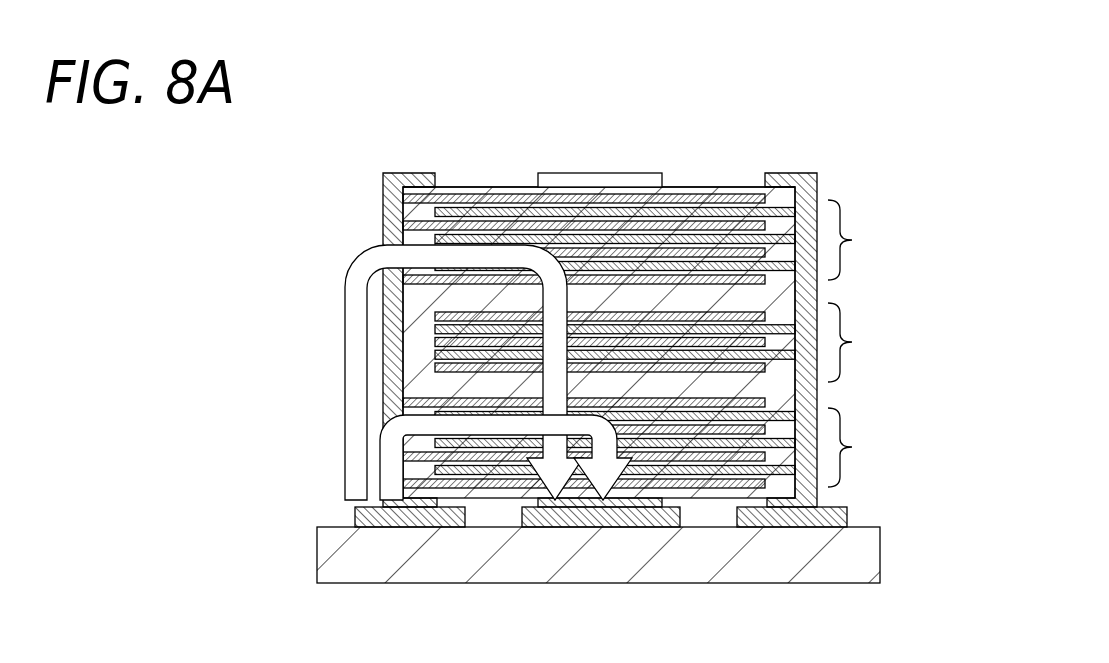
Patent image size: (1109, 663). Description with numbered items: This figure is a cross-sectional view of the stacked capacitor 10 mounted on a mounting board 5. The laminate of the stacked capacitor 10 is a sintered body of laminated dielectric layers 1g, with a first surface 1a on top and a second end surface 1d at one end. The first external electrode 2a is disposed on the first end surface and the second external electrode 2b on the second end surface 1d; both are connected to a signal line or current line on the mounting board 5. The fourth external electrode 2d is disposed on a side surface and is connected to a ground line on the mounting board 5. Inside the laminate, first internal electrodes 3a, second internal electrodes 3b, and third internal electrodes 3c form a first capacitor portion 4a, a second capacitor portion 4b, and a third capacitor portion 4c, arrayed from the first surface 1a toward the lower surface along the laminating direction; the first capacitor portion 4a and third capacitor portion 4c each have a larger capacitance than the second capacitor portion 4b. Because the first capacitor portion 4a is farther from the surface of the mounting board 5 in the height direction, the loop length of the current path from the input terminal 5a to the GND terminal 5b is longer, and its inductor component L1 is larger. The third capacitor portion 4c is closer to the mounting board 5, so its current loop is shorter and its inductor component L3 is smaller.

The stacked capacitor 10 is at (612, 345).
The first surface 1a is at (683, 190).
The dielectric layers 1g is at (475, 187).
The second end surface 1d is at (815, 397).
The first external electrode 2a is at (407, 173).
The second external electrode 2b is at (813, 175).
The fourth external electrode 2d is at (582, 183).
The first internal electrodes 3a is at (400, 198).
The second internal electrodes 3b is at (703, 207).
The third internal electrodes 3c is at (813, 307).
The first capacitor portion 4a is at (864, 240).
The second capacitor portion 4b is at (864, 342).
The third capacitor portion 4c is at (863, 447).
The mounting board 5 is at (850, 542).
The input terminal 5a is at (410, 527).
The GND terminal 5b is at (615, 527).
The inductor component L1 is at (365, 315).
The inductor component L3 is at (393, 450).